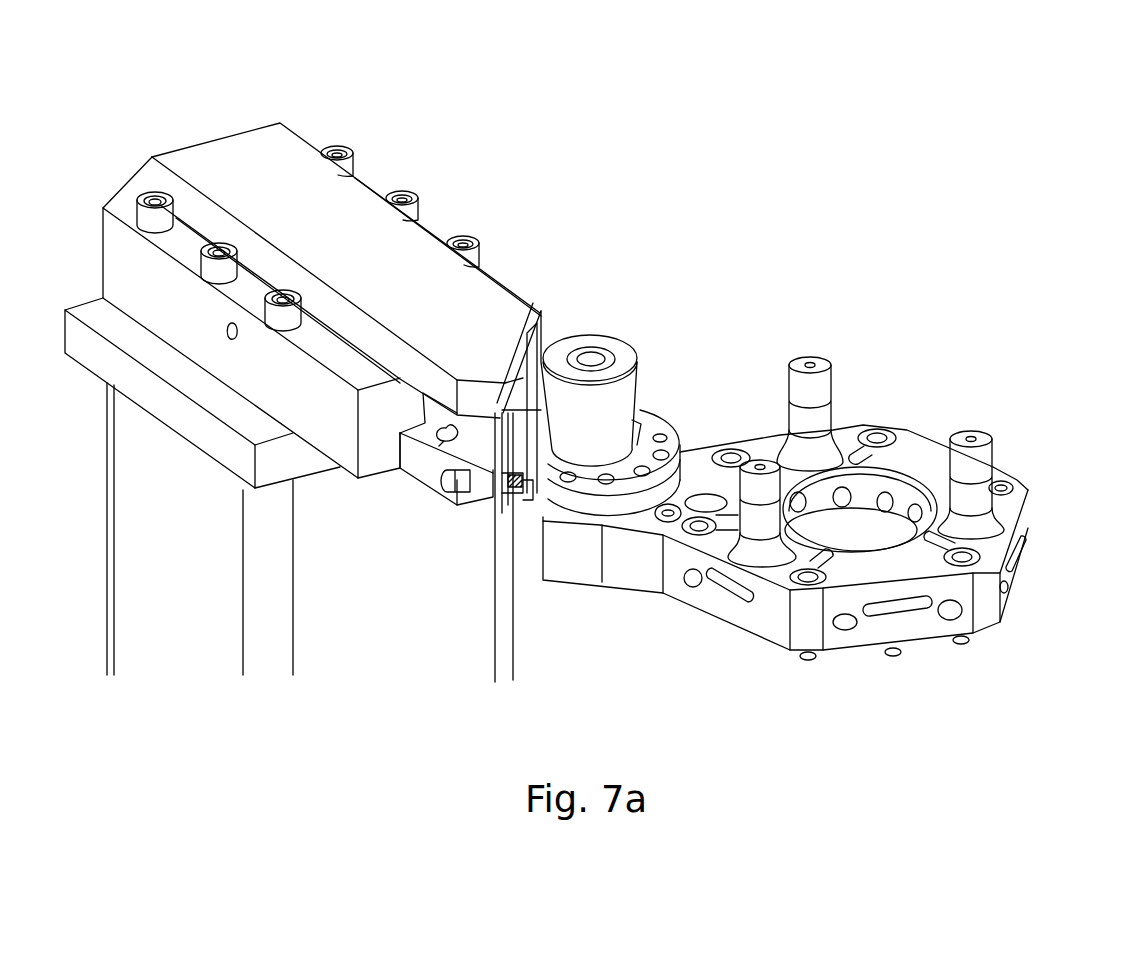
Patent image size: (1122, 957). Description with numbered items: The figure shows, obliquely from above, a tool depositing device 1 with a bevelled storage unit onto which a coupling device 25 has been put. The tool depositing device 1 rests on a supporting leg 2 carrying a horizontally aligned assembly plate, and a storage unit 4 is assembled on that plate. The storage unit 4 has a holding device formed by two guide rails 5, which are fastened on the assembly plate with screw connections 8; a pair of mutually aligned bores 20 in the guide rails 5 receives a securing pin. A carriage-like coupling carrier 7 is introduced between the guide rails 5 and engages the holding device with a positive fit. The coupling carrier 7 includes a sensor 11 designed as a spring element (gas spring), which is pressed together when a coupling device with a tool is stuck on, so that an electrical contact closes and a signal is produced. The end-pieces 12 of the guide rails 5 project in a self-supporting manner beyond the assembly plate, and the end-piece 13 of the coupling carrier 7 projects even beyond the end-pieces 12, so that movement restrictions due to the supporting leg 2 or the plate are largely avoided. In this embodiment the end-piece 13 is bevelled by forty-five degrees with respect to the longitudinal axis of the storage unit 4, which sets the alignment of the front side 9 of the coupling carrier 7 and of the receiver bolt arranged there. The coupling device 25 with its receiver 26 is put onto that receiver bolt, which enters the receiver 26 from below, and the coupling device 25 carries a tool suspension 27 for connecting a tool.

The tool depositing device 1 is at (668, 131).
The supporting leg 2 is at (465, 655).
The storage unit 4 is at (452, 197).
The guide rails 5 is at (122, 197).
The coupling carrier 7 is at (212, 170).
The screw connections 8 is at (148, 197).
The front side 9 is at (512, 395).
The sensor 11 is at (530, 510).
The end-pieces of the guide rails 12 is at (352, 463).
The end-piece of the coupling carrier 13 is at (495, 360).
The bores 20 is at (234, 322).
The coupling device 25 is at (1000, 353).
The receiver 26 is at (610, 405).
The tool suspension 27 is at (909, 452).